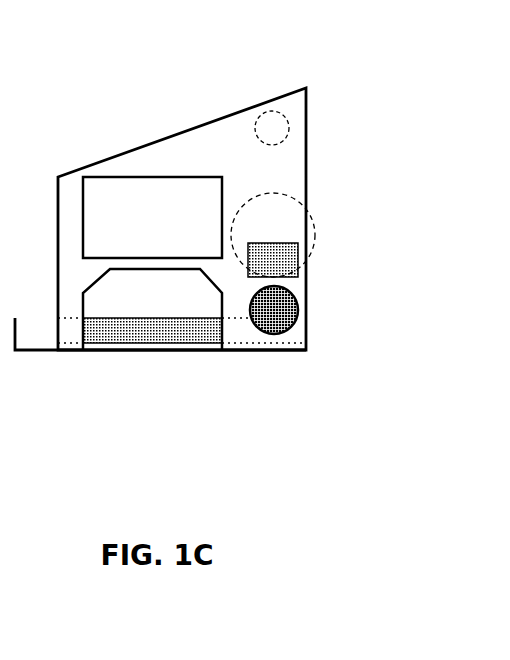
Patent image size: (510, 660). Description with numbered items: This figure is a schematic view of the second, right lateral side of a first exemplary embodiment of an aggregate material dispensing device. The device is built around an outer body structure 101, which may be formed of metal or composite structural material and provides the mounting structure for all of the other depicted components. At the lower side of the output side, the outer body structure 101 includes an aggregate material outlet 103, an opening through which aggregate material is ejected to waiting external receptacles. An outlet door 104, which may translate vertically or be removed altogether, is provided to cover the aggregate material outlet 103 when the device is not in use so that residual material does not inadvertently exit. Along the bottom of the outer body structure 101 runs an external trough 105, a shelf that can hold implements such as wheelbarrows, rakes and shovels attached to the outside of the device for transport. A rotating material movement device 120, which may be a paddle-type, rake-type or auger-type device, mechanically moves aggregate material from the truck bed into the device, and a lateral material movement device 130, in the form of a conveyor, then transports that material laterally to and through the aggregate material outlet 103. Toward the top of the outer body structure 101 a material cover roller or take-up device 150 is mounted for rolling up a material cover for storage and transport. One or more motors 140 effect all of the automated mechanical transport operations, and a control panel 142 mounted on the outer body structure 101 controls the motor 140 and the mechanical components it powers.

The outer body structure 101 is at (252, 353).
The aggregate material outlet 103 is at (173, 352).
The outlet door 104 is at (158, 217).
The external trough 105 is at (35, 353).
The rotating material movement device 120 is at (275, 230).
The lateral material movement device 130 is at (103, 337).
The motor 140 is at (287, 333).
The control panel 142 is at (290, 263).
The material cover roller or take-up device 150 is at (272, 130).